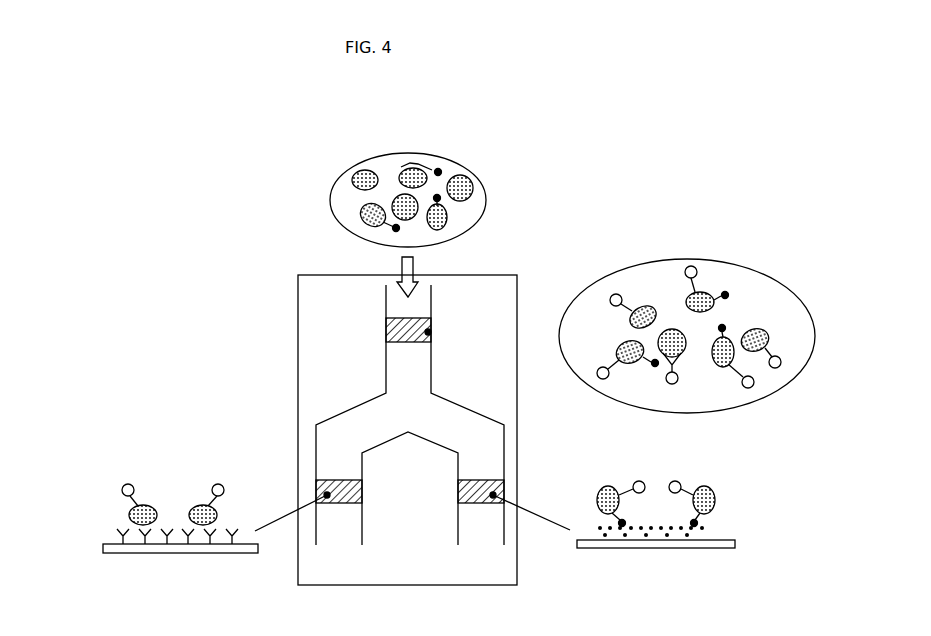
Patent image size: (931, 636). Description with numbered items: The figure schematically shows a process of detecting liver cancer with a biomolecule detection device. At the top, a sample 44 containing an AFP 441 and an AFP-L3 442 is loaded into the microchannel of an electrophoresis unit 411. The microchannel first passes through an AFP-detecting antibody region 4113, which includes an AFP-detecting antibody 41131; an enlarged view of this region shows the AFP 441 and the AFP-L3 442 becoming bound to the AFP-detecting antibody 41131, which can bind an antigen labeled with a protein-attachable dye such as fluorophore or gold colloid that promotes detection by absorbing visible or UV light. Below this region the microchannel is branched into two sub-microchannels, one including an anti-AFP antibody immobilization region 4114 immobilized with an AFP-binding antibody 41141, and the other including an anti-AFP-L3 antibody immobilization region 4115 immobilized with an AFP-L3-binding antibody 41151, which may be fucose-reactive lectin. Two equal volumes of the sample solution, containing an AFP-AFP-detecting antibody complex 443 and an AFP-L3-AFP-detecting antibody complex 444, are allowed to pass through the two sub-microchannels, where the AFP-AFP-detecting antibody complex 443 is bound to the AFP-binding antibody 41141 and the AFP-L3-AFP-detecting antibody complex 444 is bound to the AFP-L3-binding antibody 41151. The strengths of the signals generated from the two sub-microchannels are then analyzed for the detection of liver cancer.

The sample 44 is at (477, 177).
The AFP 441 is at (363, 172).
The AFP-L3 442 is at (416, 164).
The electrophoresis unit 411 is at (298, 305).
The AFP-detecting antibody region 4113 is at (558, 338).
The AFP-detecting antibody 41131 is at (616, 294).
The anti-AFP antibody immobilization region 4114 is at (327, 495).
The anti-AFP-L3 antibody immobilization region 4115 is at (493, 495).
The AFP-binding antibody 41141 is at (118, 537).
The AFP-L3-binding antibody 41151 is at (707, 535).
The AFP-AFP-detecting antibody complex 443 is at (138, 479).
The AFP-L3-AFP-detecting antibody complex 444 is at (713, 483).